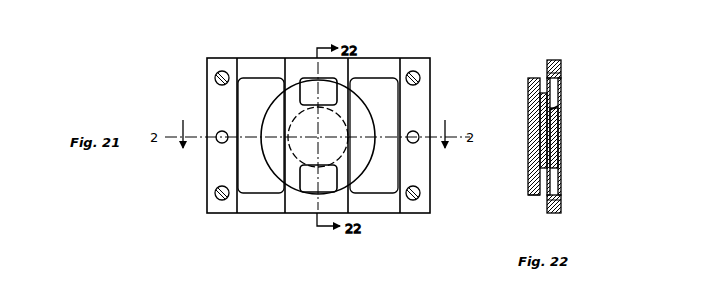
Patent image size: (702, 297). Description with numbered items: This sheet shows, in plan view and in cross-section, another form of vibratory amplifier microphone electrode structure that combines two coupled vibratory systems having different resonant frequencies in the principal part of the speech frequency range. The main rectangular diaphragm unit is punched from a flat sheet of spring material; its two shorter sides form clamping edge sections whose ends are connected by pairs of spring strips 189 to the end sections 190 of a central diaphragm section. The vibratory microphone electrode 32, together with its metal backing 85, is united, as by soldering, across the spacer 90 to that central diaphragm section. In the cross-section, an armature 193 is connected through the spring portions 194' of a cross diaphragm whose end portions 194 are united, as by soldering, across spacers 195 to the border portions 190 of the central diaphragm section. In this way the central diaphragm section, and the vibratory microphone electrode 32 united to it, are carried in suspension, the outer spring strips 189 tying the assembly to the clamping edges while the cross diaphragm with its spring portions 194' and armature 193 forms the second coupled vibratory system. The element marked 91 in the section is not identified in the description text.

In FIG. 21, the spring strips 189 is at (269, 45).
In FIG. 21, the metal backing 85 is at (271, 112).
In FIG. 22, the metal backing 85 is at (529, 195).
In FIG. 21, the armature 193 is at (293, 178).
In FIG. 22, the armature 193 is at (560, 137).
In FIG. 21, the end portions of cross diaphragm 194 is at (295, 156).
In FIG. 22, the end portions of cross diaphragm 194 is at (573, 127).
In FIG. 21, the spring portions of cross diaphragm 194' is at (314, 129).
In FIG. 22, the spacer 90 is at (528, 89).
In FIG. 22, the vibratory microphone electrode 32 is at (534, 116).
In FIG. 22, the spacers 195 is at (553, 60).
In FIG. 22, the sensor element 91 is at (553, 112).
In FIG. 22, the end sections of central diaphragm section 190 is at (548, 74).